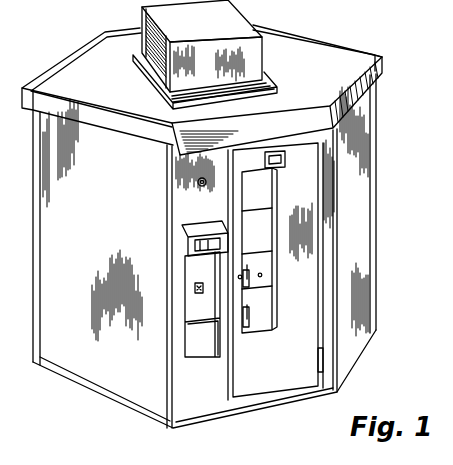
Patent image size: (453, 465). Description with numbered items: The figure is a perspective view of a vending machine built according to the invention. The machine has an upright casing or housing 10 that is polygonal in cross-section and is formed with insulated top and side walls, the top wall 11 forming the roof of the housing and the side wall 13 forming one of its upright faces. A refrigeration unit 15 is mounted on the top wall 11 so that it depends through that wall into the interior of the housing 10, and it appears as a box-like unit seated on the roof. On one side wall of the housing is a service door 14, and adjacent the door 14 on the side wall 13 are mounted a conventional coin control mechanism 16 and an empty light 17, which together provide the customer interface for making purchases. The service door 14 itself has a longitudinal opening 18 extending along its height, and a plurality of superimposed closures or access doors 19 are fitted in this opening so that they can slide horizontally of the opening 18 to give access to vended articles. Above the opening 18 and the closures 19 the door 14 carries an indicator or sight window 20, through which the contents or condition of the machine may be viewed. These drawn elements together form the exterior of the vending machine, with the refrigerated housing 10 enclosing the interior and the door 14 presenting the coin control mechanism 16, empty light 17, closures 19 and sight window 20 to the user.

The casing or housing 10 is at (383, 56).
The top wall 11 is at (72, 68).
The side wall 13 is at (120, 398).
The service door 14 is at (262, 388).
The refrigeration unit 15 is at (263, 53).
The coin control mechanism 16 is at (200, 268).
The empty light 17 is at (203, 187).
The longitudinal opening 18 is at (277, 310).
The closures or access doors 19 is at (262, 230).
The indicator or sight window 20 is at (286, 164).